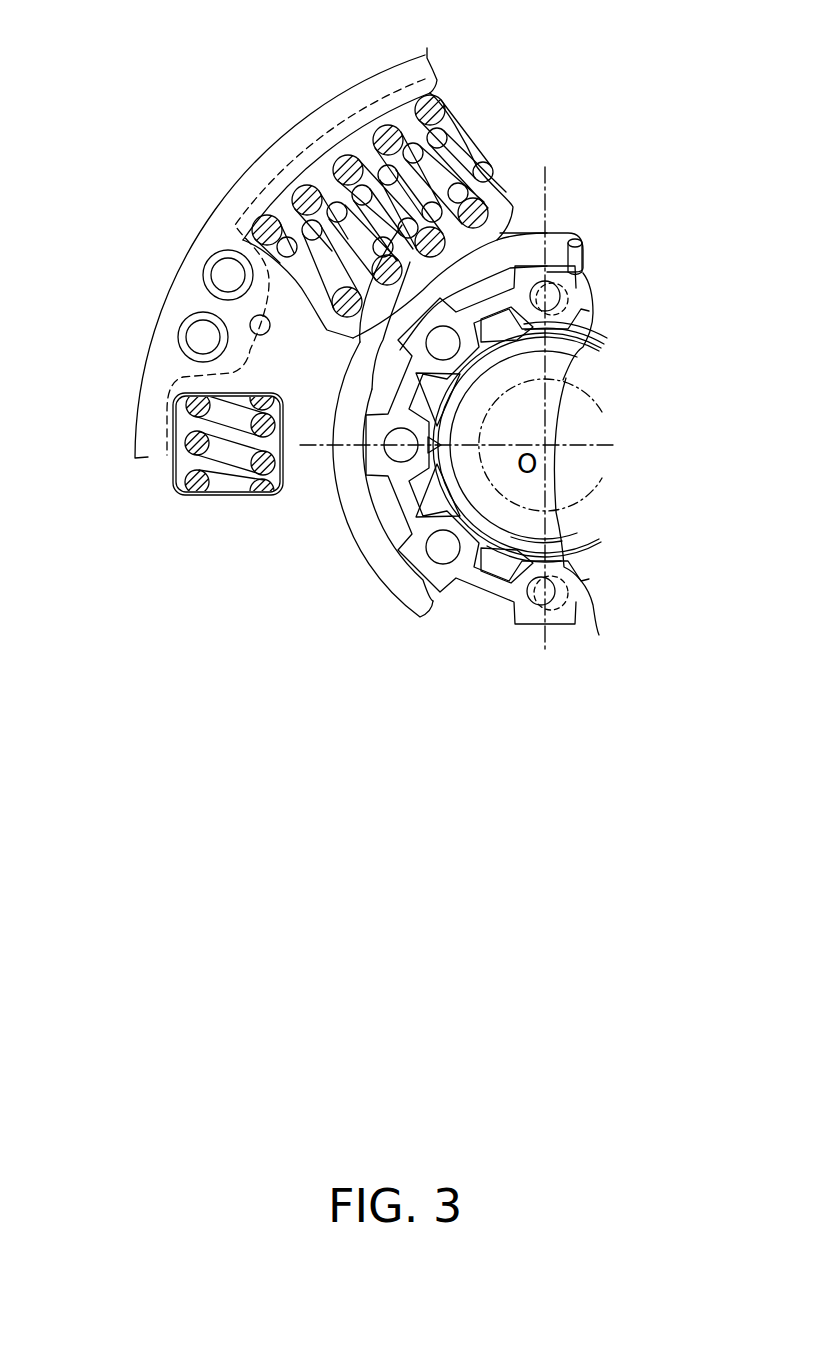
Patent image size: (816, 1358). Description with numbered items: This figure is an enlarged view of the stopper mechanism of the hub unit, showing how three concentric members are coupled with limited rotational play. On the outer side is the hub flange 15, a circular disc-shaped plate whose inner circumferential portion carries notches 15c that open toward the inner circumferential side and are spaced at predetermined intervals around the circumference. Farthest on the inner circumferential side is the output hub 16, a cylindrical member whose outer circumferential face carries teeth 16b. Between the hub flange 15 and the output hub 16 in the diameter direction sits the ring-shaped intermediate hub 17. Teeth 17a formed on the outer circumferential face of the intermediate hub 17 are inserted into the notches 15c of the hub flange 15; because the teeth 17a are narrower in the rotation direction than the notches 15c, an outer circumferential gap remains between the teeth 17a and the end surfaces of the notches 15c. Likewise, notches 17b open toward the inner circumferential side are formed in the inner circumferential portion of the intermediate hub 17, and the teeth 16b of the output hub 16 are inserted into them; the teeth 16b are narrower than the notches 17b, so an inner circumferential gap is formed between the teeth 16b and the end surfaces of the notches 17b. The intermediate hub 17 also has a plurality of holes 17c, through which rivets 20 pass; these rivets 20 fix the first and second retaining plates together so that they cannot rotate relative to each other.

The hub flange 15 is at (380, 87).
The notches 15c is at (503, 234).
The output hub 16 is at (592, 299).
The teeth 16b is at (567, 472).
The intermediate hub 17 is at (478, 583).
The teeth 17a is at (428, 331).
The notches 17b is at (520, 370).
The holes 17c is at (560, 291).
The rivets 20 is at (360, 461).